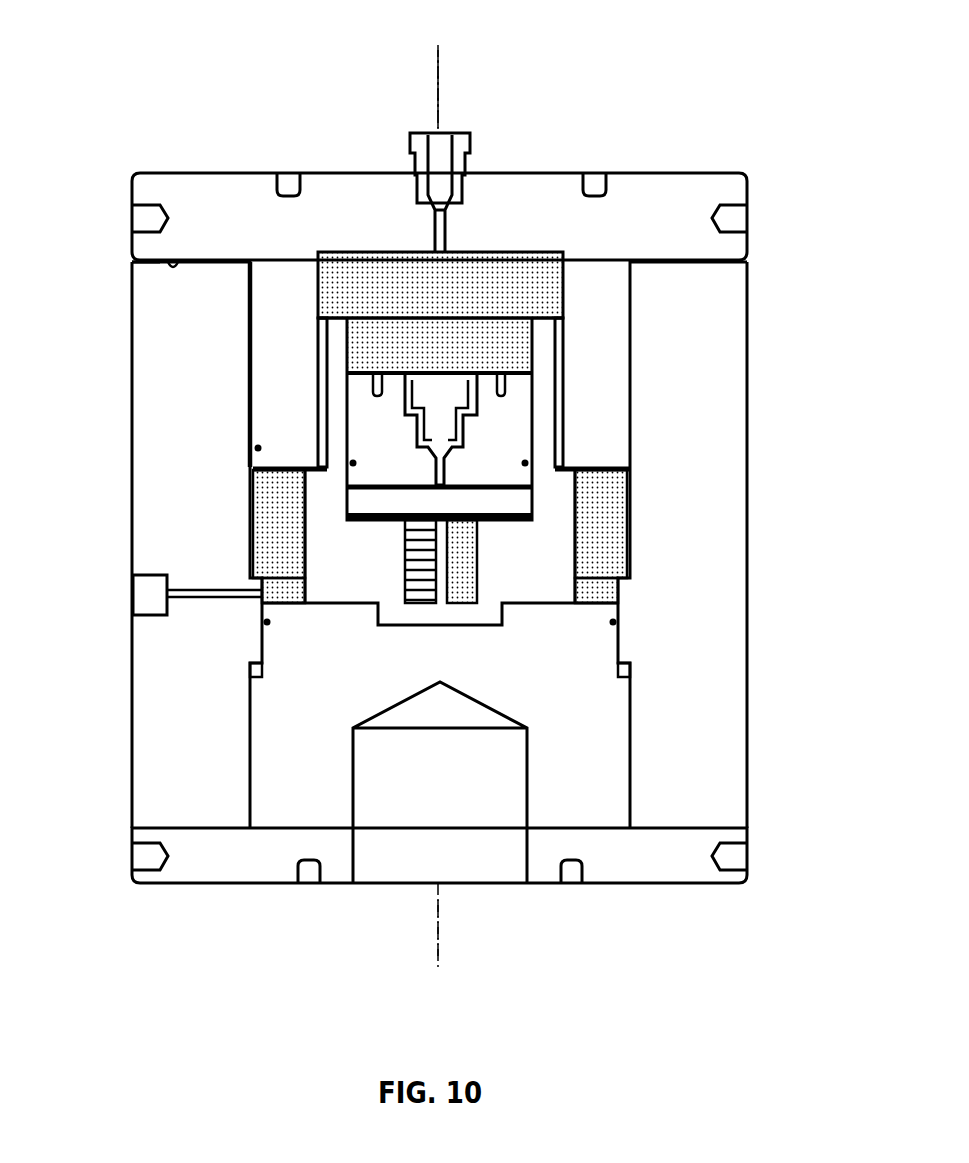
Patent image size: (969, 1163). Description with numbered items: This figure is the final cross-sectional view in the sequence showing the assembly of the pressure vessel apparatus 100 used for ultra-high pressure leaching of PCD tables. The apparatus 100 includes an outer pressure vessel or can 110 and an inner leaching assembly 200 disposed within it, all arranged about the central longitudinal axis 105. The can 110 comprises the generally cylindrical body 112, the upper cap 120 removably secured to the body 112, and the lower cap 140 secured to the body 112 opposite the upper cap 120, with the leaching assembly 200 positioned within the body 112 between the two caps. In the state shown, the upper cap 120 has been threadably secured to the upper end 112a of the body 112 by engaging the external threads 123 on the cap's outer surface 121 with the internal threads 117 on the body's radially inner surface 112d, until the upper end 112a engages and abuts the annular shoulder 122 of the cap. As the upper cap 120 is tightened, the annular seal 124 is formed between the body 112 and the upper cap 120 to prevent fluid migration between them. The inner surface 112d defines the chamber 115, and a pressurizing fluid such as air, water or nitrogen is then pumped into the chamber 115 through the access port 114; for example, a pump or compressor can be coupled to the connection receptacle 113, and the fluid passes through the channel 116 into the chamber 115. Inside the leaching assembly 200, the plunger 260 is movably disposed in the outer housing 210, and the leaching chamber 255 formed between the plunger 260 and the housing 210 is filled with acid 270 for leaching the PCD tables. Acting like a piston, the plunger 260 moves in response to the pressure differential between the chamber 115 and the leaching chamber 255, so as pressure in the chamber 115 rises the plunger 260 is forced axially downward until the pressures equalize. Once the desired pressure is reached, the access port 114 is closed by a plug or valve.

The apparatus 100 is at (672, 80).
The central or longitudinal axis 105 is at (438, 48).
The outer pressure vessel or can 110 is at (756, 222).
The upper cap 120 is at (152, 163).
The outer housing or body 112 is at (108, 388).
The upper end of body 112a is at (150, 262).
The radially inner surface of body 112d is at (252, 390).
The annular shoulder 122 is at (173, 268).
The outer surface of upper cap 121 is at (246, 297).
The first set of internal threads 117 is at (246, 333).
The external threads 123 is at (256, 352).
The annular seal 124 is at (250, 450).
The inner cavity or chamber 115 is at (373, 265).
The leaching assembly 200 is at (568, 373).
The plunger 260 is at (544, 415).
The leaching chamber 255 is at (514, 502).
The outer housing 210 is at (301, 518).
The acid 270 is at (500, 523).
The connection receptacle 113 is at (157, 573).
The channel 116 is at (222, 588).
The access port 114 is at (162, 627).
The lower cap 140 is at (162, 902).